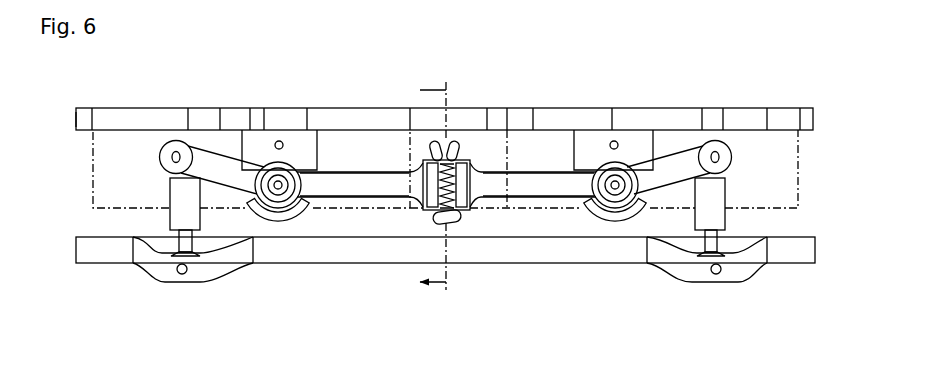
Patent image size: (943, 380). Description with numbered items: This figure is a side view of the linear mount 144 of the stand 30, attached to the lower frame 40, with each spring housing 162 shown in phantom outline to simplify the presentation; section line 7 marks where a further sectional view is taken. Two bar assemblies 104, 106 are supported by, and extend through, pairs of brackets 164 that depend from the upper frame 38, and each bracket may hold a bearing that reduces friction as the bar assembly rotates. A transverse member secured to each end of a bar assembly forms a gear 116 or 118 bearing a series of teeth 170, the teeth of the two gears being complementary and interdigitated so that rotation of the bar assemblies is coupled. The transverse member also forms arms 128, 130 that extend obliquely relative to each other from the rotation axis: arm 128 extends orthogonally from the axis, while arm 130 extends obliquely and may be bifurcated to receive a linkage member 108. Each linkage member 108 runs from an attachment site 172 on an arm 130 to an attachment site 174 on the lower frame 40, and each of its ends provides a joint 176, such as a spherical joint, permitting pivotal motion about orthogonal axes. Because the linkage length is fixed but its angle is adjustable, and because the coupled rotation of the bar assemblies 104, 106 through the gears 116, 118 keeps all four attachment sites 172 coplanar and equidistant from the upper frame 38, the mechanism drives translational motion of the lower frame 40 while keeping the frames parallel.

The section line 7- 7 is at (423, 186).
The stand 30 is at (71, 105).
The upper frame 38 is at (77, 121).
The lower frame 40 is at (76, 250).
The bar assembly 104 is at (316, 210).
The bar assembly 106 is at (573, 211).
The linkage member 108 is at (170, 197).
The gear 116 is at (342, 166).
The gear 118 is at (530, 164).
The arm 128 is at (364, 172).
The arm 130 is at (240, 190).
The linear mount 144 is at (74, 160).
The spring housing 162 is at (799, 191).
The bracket 164 is at (242, 143).
The teeth 170 is at (426, 226).
The attachment site 172 is at (162, 142).
The attachment site 174 is at (195, 286).
The joint 176 is at (188, 141).